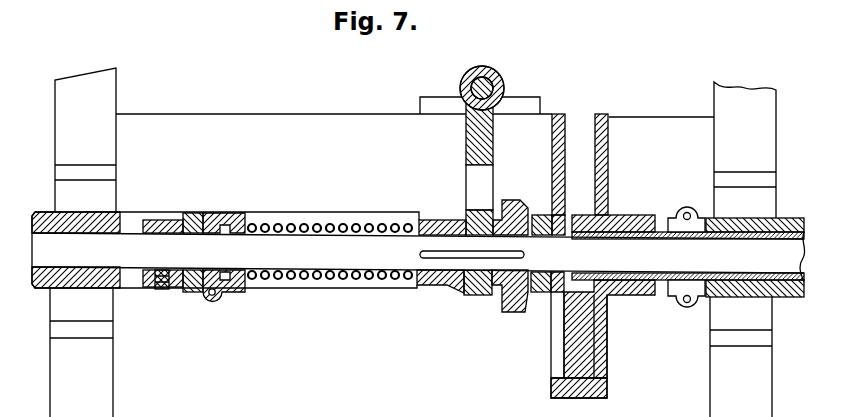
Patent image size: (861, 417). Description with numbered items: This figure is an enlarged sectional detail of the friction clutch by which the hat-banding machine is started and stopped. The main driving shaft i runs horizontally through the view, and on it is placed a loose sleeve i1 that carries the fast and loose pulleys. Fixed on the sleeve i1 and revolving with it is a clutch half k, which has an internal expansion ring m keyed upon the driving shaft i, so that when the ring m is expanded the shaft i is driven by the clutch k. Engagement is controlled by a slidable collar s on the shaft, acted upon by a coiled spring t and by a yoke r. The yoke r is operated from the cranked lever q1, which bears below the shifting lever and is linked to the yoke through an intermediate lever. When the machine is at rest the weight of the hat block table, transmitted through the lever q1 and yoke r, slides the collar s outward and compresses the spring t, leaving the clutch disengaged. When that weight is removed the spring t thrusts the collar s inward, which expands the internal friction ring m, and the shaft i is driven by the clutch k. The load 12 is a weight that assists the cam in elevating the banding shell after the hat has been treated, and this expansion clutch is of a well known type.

The lever q1 is at (501, 82).
The load 12 is at (464, 148).
The internal expansion ring m is at (552, 168).
The clutch half k is at (581, 256).
The main driving shaft i is at (133, 262).
The loose sleeve i1 is at (664, 283).
The spring t is at (300, 280).
The slidable collar s is at (447, 289).
The yoke r is at (474, 297).